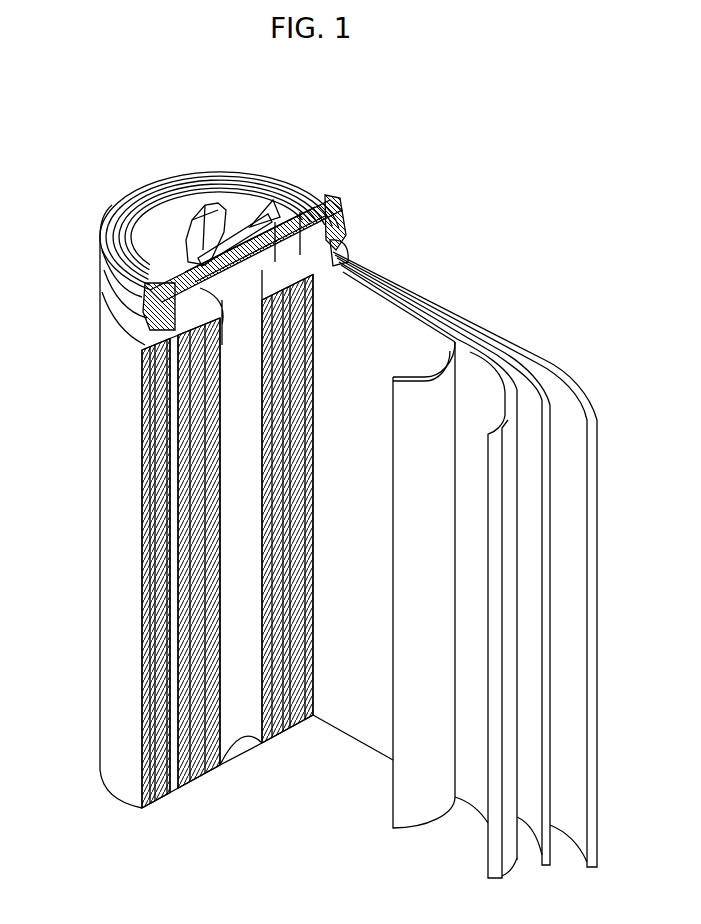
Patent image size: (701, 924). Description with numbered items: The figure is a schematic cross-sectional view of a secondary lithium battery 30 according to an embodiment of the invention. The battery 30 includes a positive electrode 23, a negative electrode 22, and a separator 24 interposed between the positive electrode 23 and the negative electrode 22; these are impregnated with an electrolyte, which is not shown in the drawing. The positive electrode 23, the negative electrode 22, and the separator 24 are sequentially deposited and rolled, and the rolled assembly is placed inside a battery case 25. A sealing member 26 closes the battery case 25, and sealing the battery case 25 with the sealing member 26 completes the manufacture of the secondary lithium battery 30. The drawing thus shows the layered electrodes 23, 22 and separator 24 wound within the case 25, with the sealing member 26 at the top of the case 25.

The secondary lithium battery 30 is at (298, 122).
The sealing member 26 is at (215, 212).
The battery case 25 is at (107, 528).
The separator 24 is at (427, 377).
The positive electrode 23 is at (503, 383).
The negative electrode 22 is at (573, 387).